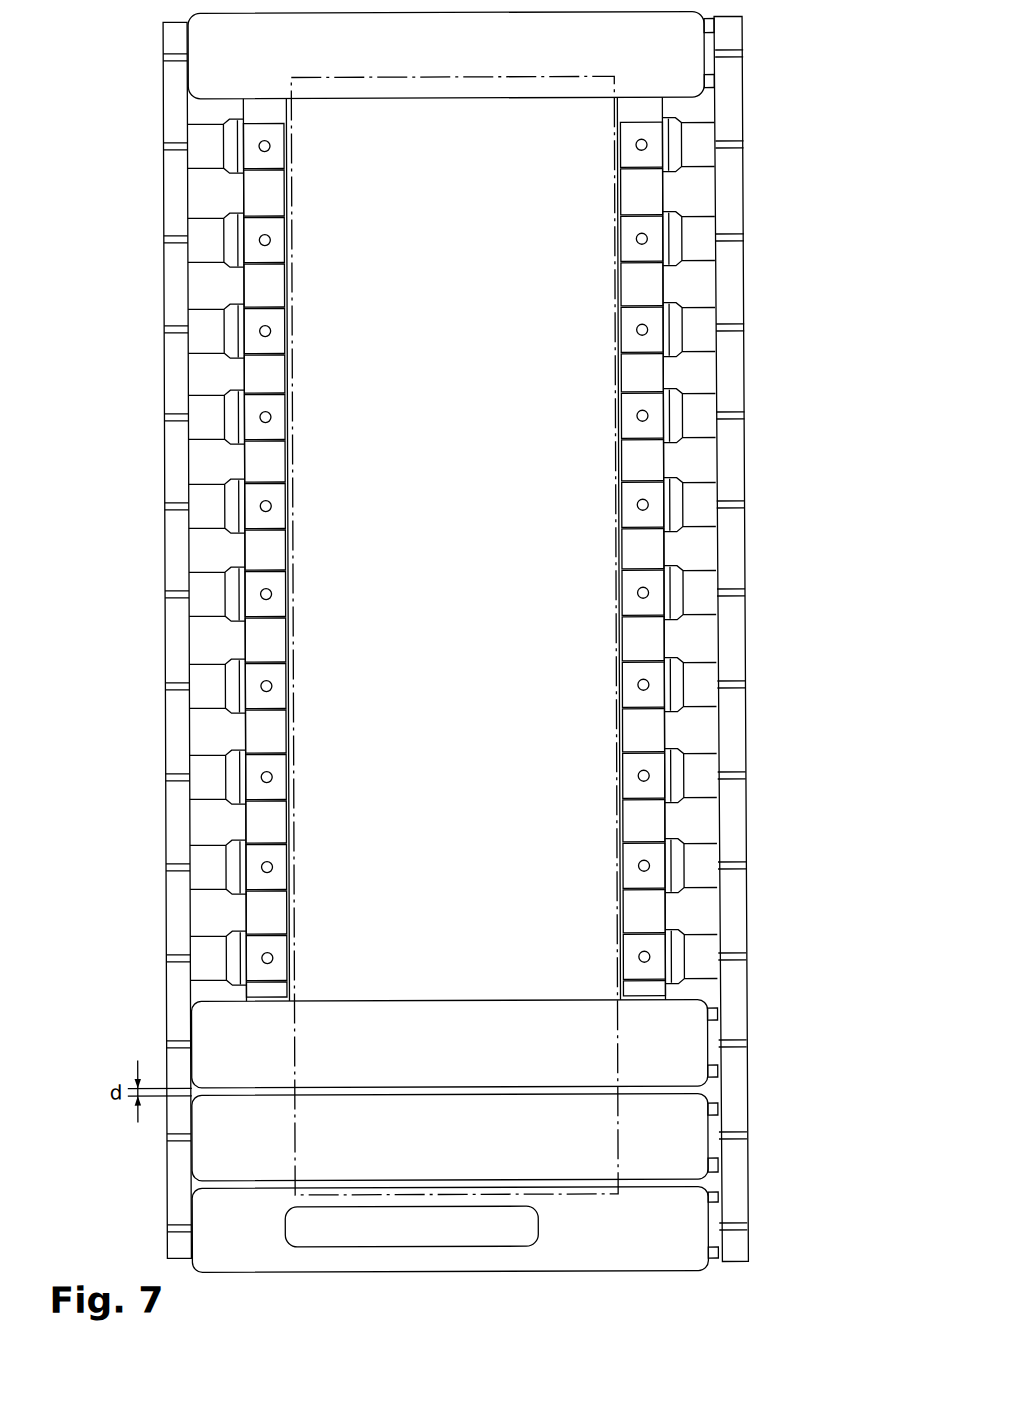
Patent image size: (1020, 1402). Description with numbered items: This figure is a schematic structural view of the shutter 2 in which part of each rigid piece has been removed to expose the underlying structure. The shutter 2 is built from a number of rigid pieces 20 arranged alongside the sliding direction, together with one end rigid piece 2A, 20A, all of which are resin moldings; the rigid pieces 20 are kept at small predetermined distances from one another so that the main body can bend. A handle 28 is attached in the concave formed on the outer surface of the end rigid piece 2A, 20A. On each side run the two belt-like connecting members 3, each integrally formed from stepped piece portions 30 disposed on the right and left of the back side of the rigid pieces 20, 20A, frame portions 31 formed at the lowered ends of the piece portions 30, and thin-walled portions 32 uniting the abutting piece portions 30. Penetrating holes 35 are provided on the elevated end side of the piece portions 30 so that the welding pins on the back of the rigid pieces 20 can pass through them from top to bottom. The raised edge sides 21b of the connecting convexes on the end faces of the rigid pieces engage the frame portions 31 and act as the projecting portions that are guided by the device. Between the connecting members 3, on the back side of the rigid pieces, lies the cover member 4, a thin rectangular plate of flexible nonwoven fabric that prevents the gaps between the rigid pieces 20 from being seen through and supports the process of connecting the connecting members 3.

The shutter 2 is at (422, 103).
The rigid piece 20 is at (453, 596).
The end plate member 2A is at (455, 1258).
The rigid piece 20A is at (455, 1258).
The edge side 21b is at (712, 82).
The connecting member 3 is at (752, 484).
The frame portion 31 is at (170, 443).
The cover member 4 is at (582, 745).
The handle 28 is at (383, 1234).
The piece portion 30 is at (276, 322).
The thin-walled portion 32 is at (273, 287).
The penetrating hole 35 is at (270, 416).